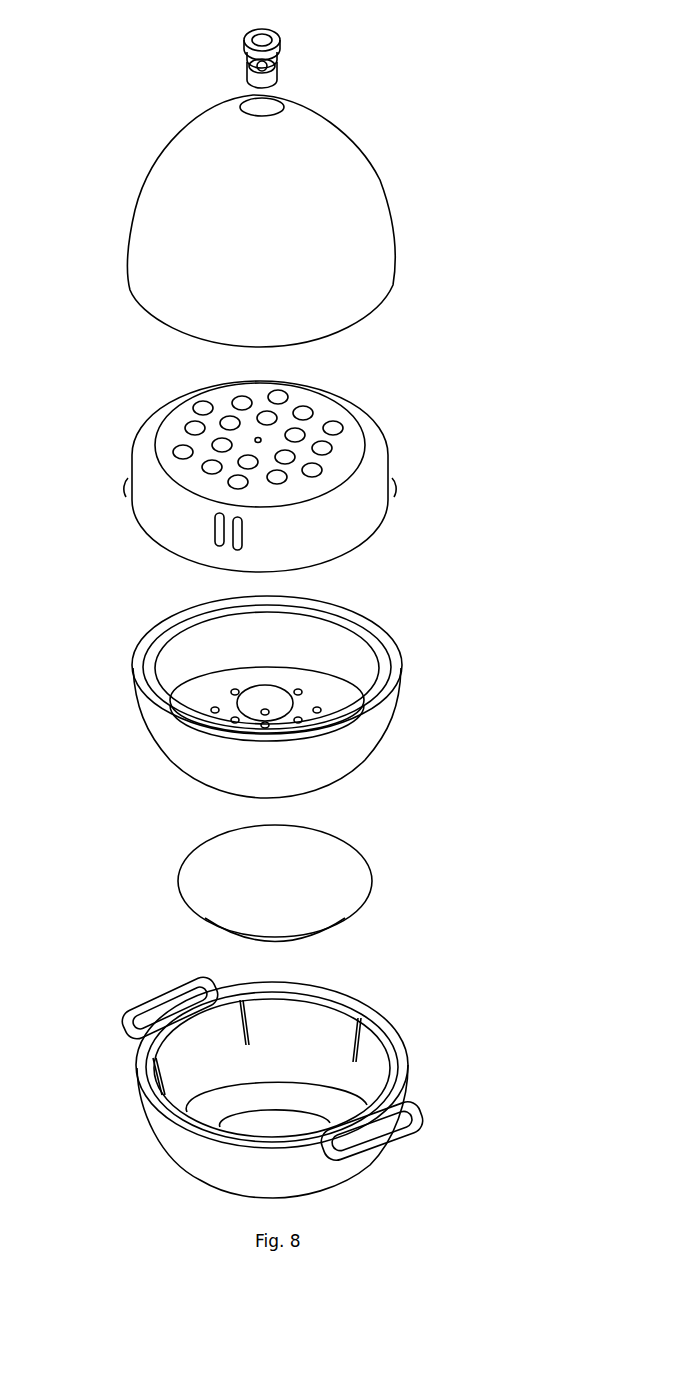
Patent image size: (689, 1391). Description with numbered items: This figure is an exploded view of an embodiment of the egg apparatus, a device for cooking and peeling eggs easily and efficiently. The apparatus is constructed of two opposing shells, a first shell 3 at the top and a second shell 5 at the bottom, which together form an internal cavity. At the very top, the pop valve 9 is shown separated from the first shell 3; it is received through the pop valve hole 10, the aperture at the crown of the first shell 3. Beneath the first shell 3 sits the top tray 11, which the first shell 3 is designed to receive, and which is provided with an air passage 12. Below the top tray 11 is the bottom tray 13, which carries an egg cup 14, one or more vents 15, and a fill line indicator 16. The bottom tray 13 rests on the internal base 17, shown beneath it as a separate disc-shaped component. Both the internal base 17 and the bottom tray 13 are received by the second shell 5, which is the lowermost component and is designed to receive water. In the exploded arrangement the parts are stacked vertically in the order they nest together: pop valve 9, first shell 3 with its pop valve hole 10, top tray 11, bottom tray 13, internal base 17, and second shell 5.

The first shell 3 is at (365, 210).
The second shell 5 is at (217, 1173).
The pop valve 9 is at (282, 42).
The pop valve hole 10 is at (258, 107).
The top tray 11 is at (357, 488).
The air passage 12 is at (260, 439).
The bottom tray 13 is at (365, 745).
The egg cup 14 is at (273, 698).
The vent 15 is at (233, 720).
The fill line indicator 16 is at (263, 710).
The internal base 17 is at (372, 880).